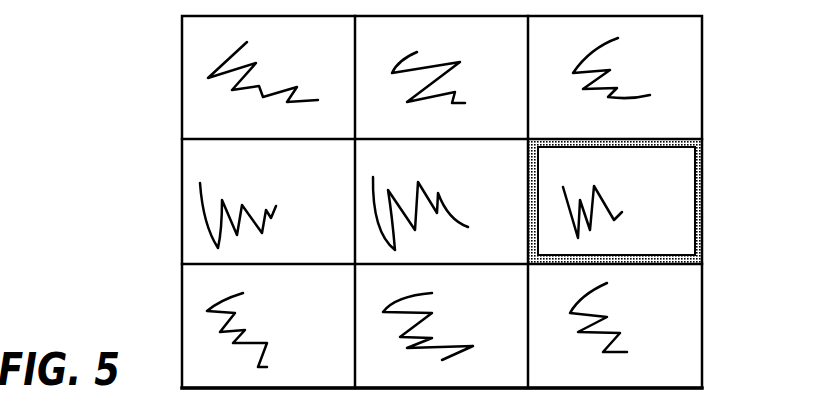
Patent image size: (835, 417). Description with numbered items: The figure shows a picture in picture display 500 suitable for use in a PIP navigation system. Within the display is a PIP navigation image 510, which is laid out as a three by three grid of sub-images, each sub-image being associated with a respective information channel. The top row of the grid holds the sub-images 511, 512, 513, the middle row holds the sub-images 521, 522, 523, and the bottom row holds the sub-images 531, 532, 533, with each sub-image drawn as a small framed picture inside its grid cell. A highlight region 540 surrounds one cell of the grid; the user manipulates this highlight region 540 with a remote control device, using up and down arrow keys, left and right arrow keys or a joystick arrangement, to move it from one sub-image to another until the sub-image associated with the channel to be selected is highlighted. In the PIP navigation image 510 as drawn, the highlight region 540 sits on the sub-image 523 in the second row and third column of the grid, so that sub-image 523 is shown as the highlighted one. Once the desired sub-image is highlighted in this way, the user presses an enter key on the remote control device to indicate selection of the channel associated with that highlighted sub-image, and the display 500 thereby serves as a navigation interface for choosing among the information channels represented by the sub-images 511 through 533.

The picture in picture display 500 is at (85, 320).
The PIP navigation image 510 is at (183, 285).
The sub-image 511 is at (343, 53).
The sub-image 512 is at (515, 52).
The sub-image 513 is at (688, 53).
The sub-image 521 is at (345, 178).
The sub-image 522 is at (517, 178).
The sub-image 523 is at (688, 180).
The sub-image 531 is at (345, 300).
The sub-image 532 is at (517, 300).
The sub-image 533 is at (690, 301).
The highlight region 540 is at (704, 221).